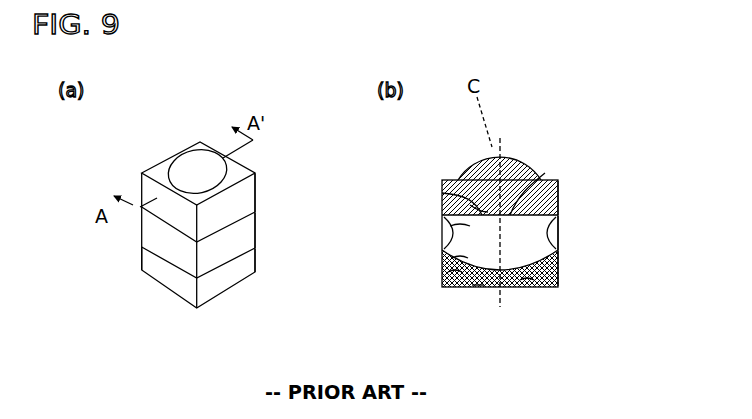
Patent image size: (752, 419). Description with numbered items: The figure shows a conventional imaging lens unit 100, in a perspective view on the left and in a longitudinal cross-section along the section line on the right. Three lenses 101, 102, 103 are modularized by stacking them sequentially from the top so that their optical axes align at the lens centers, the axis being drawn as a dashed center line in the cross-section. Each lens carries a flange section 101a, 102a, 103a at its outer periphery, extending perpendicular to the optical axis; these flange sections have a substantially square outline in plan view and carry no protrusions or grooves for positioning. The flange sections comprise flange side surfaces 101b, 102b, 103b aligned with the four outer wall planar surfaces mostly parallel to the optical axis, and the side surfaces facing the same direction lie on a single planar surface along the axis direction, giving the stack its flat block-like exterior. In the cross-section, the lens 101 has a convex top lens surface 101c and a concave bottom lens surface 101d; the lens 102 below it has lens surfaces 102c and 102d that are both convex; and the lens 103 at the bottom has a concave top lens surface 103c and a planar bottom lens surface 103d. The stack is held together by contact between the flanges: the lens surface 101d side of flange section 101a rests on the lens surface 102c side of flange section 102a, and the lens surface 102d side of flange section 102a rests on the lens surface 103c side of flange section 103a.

The imaging lens unit 100 is at (268, 182).
The lens 101 is at (130, 185).
The flange section 101a is at (442, 215).
The flange side surface 101b is at (250, 197).
The top lens surface 101c is at (510, 158).
The bottom lens surface 101d is at (545, 173).
The lens 102 is at (132, 228).
The flange section 102a is at (457, 227).
The flange side surface 102b is at (250, 233).
The lens surface 102c is at (470, 205).
The lens surface 102d is at (460, 277).
The lens 103 is at (158, 290).
The flange section 103a is at (460, 258).
The flange side surface 103b is at (252, 270).
The top lens surface 103c is at (527, 283).
The bottom lens surface 103d is at (478, 287).